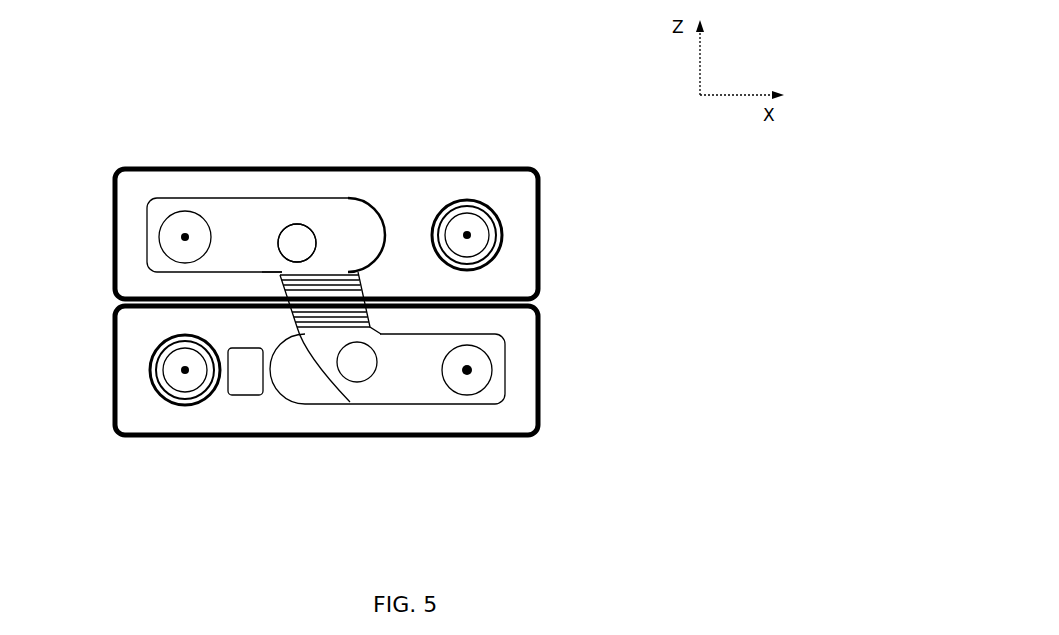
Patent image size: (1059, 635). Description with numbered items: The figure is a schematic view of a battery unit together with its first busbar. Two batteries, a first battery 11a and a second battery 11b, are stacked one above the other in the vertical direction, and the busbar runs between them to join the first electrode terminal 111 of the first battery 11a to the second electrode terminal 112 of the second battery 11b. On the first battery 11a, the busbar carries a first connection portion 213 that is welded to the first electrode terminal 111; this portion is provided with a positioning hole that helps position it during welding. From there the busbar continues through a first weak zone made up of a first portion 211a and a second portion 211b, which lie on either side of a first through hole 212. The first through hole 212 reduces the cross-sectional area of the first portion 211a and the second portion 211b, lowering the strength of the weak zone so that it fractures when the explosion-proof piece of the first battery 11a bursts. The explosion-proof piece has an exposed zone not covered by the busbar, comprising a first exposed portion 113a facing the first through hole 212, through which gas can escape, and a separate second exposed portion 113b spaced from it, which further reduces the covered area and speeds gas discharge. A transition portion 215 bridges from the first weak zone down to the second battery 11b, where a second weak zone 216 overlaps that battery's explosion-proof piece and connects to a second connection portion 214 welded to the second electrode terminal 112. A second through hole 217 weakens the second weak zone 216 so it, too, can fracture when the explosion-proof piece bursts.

The first battery 11a is at (562, 235).
The second battery 11b is at (565, 372).
The first electrode terminal 111 is at (185, 378).
The second electrode terminal 112 is at (467, 235).
The first exposed portion 113a is at (299, 224).
The second exposed portion 113b is at (360, 218).
The first portion 211a is at (325, 223).
The second portion 211b is at (283, 270).
The first through hole 212 is at (280, 238).
The first connection portion 213 is at (160, 242).
The second connection portion 214 is at (467, 375).
The transition portion 215 is at (364, 290).
The second weak zone 216 is at (340, 385).
The second through hole 217 is at (357, 362).